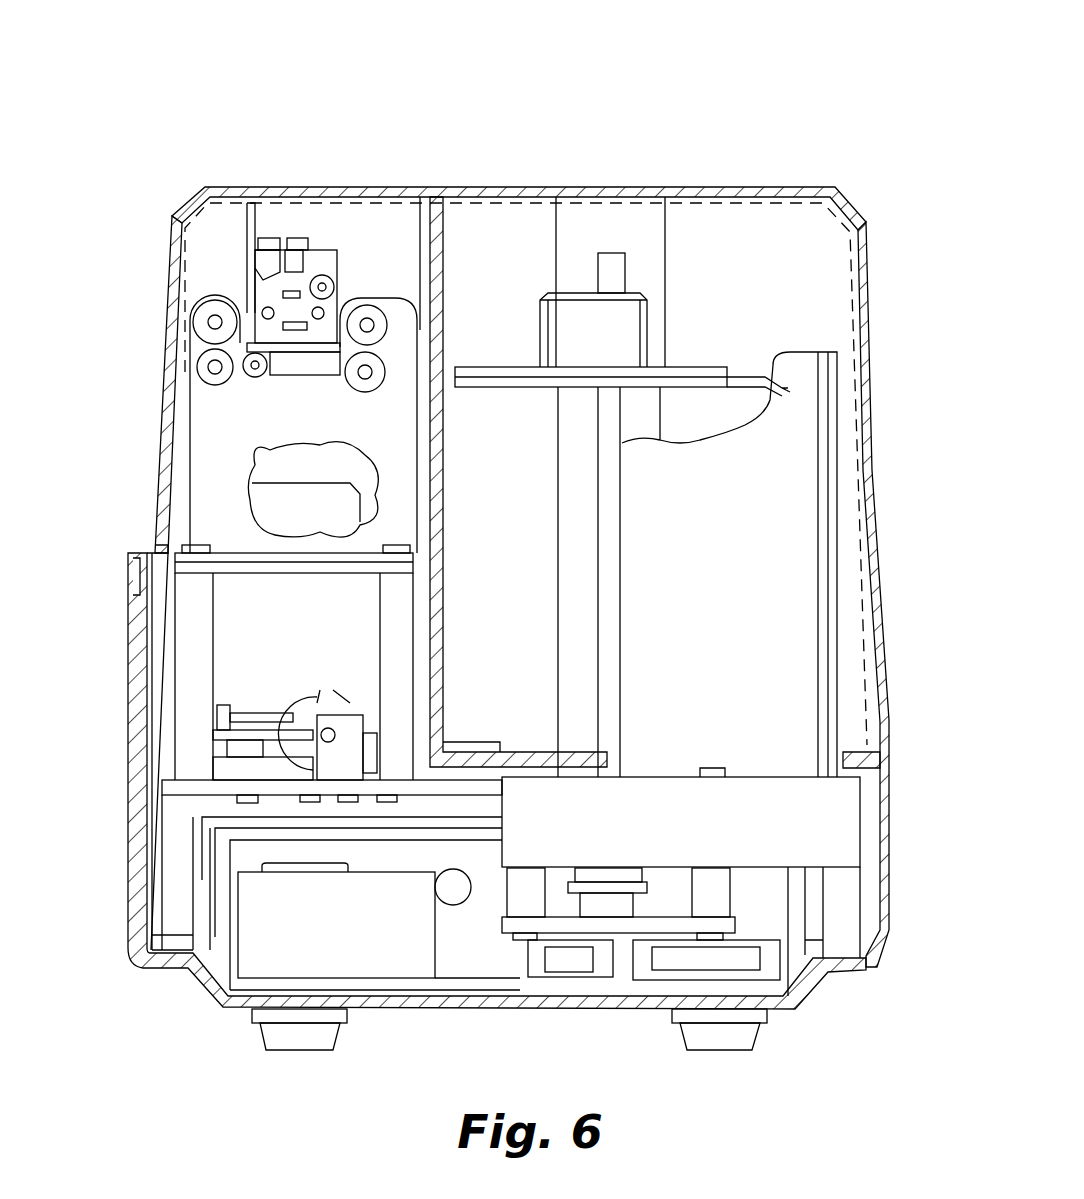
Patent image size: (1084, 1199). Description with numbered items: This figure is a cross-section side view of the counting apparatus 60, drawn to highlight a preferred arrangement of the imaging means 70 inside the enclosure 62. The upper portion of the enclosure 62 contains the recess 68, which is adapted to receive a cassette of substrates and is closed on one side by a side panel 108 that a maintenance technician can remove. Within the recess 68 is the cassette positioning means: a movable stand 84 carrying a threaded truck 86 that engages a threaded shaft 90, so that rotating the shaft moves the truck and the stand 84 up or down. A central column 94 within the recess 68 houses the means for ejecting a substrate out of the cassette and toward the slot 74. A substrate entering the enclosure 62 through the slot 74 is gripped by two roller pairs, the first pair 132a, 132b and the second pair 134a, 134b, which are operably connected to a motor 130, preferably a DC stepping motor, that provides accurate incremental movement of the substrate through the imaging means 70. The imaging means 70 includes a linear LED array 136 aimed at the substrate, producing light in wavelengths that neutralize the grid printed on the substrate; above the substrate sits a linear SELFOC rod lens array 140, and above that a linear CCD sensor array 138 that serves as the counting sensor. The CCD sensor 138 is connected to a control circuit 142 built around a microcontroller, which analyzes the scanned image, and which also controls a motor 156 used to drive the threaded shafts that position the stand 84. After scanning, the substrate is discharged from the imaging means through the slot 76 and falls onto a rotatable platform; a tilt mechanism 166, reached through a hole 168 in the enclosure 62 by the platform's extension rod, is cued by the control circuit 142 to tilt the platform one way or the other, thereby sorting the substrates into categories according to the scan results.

The counting apparatus 60 is at (672, 68).
The enclosure 62 is at (128, 655).
The recess 68 is at (725, 256).
The imaging means 70 is at (347, 242).
The slot 74 is at (445, 340).
The slot 76 is at (180, 352).
The movable stand 84 is at (487, 389).
The threaded truck 86 is at (572, 330).
The threaded shaft 90 is at (612, 253).
The central column 94 is at (797, 362).
The side panel 108 is at (852, 206).
The motor 130 is at (250, 496).
The roller 132a is at (213, 300).
The roller 132b is at (215, 386).
The roller 134a is at (375, 305).
The roller 134b is at (365, 393).
The linear LED array 136 is at (268, 238).
The linear CCD sensor array 138 is at (297, 238).
The SELFOC lens array 140 is at (333, 283).
The control circuit 142 is at (470, 962).
The motor 156 is at (668, 960).
The tilt mechanism 166 is at (270, 695).
The hole 168 is at (152, 548).